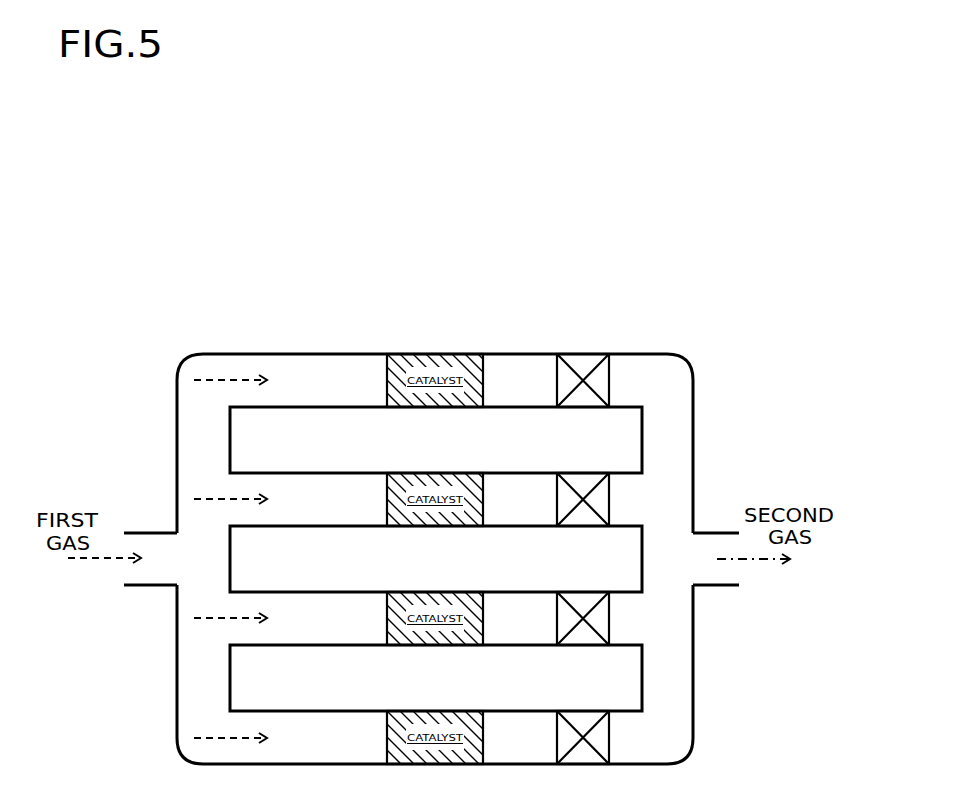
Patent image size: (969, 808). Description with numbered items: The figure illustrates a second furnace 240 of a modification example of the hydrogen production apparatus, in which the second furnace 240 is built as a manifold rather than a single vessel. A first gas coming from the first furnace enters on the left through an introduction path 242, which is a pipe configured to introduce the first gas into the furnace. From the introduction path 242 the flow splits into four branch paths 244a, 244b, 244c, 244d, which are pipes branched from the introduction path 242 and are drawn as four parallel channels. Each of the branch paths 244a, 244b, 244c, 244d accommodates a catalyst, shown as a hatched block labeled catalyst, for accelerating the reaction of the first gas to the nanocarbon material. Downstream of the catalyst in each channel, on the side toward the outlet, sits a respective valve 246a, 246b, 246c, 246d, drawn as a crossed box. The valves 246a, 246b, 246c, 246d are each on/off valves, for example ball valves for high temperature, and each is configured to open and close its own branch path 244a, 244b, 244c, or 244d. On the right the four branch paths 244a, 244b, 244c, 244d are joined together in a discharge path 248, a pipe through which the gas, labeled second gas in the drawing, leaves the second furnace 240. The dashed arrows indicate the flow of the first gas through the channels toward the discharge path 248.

The second furnace 240 is at (163, 124).
The introduction path 242 is at (147, 532).
The branch path 244a is at (363, 334).
The branch path 244b is at (363, 452).
The branch path 244c is at (363, 571).
The branch path 244d is at (363, 691).
The valve 246a is at (612, 334).
The valve 246b is at (612, 452).
The valve 246c is at (612, 571).
The valve 246d is at (612, 691).
The discharge path 248 is at (722, 532).